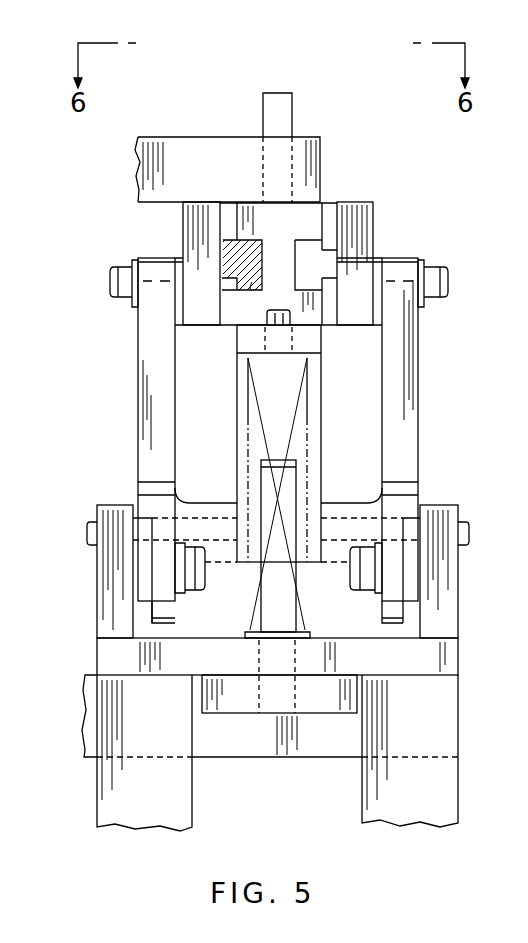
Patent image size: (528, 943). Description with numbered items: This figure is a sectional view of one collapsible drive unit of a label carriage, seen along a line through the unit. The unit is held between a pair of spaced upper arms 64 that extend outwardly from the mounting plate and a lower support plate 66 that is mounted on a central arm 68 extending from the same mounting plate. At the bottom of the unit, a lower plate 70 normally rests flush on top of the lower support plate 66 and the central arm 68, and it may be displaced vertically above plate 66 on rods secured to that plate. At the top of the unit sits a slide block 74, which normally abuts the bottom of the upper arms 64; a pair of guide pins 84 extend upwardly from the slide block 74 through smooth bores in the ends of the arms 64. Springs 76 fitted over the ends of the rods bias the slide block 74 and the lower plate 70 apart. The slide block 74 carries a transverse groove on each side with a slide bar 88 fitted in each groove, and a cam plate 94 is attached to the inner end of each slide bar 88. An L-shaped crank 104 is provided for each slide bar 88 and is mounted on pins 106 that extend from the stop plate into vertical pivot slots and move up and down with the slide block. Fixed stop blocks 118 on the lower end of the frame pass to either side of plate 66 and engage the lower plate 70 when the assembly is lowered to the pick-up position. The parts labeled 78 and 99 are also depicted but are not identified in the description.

The upper arms 64 is at (195, 142).
The guide pins 84 is at (287, 112).
The slide block 74 is at (303, 220).
The cam plate 94 is at (195, 232).
The slide bar 88 is at (303, 273).
The L-shaped crank 104 is at (138, 410).
The springs 76 is at (308, 428).
The pins 106 is at (204, 522).
The left outer plate 99 is at (110, 582).
The rod 78 is at (278, 605).
The lower plate 70 is at (447, 660).
The central arm 68 is at (237, 745).
The lower support plate 66 is at (328, 700).
The fixed stop blocks 118 is at (113, 797).